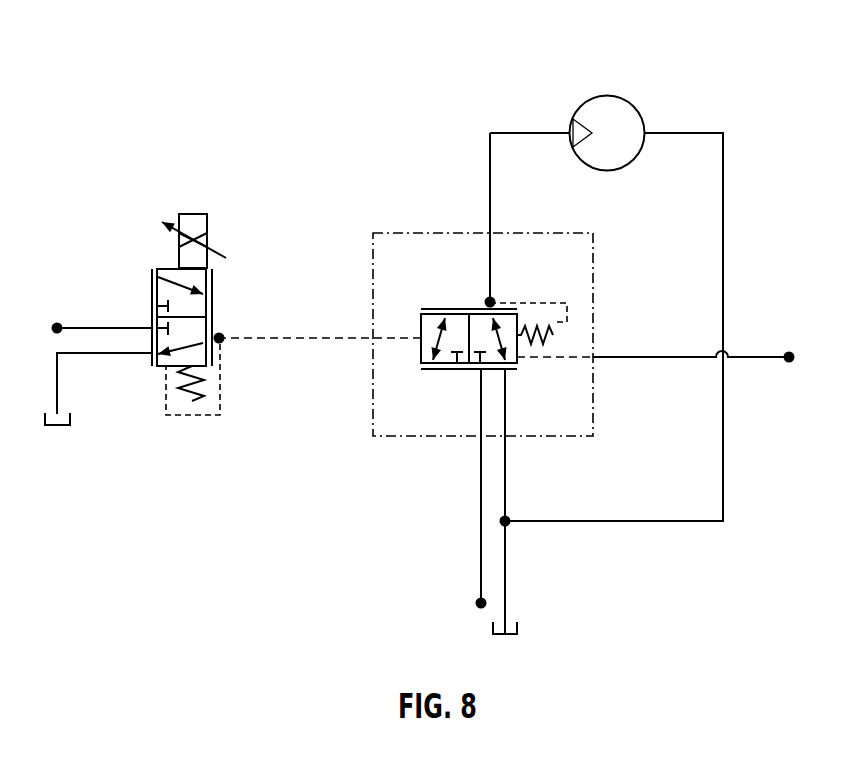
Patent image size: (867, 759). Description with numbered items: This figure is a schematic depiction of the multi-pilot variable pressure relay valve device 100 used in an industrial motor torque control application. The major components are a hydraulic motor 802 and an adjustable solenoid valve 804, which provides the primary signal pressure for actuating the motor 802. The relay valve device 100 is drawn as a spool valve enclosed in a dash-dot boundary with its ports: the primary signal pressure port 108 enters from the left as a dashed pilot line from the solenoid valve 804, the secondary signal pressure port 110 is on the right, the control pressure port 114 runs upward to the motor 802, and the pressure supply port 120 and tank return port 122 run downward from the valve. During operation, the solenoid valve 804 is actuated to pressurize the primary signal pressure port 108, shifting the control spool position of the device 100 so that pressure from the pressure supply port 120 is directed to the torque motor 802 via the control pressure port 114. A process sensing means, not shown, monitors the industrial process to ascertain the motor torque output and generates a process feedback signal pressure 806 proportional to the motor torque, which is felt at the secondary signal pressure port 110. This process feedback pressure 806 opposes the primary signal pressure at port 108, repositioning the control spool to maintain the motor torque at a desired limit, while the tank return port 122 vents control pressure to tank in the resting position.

The multi-pilot variable pressure relay valve device 100 is at (387, 193).
The primary signal pressure port 108 is at (373, 338).
The secondary signal pressure port 110 is at (593, 357).
The control pressure port 114 is at (490, 233).
The pressure supply port 120 is at (480, 436).
The tank return port 122 is at (505, 436).
The hydraulic motor 802 is at (605, 96).
The adjustable solenoid valve 804 is at (140, 287).
The process feedback signal pressure 806 is at (789, 351).